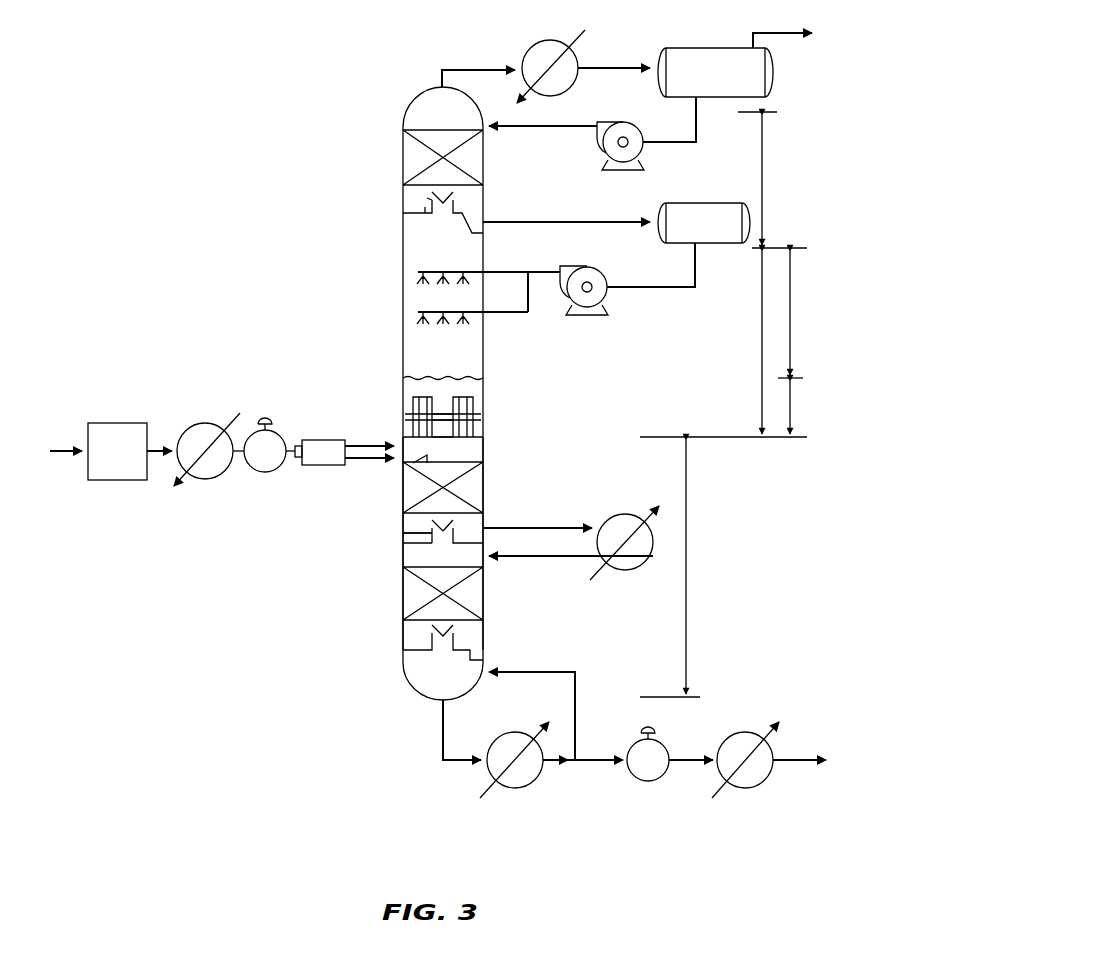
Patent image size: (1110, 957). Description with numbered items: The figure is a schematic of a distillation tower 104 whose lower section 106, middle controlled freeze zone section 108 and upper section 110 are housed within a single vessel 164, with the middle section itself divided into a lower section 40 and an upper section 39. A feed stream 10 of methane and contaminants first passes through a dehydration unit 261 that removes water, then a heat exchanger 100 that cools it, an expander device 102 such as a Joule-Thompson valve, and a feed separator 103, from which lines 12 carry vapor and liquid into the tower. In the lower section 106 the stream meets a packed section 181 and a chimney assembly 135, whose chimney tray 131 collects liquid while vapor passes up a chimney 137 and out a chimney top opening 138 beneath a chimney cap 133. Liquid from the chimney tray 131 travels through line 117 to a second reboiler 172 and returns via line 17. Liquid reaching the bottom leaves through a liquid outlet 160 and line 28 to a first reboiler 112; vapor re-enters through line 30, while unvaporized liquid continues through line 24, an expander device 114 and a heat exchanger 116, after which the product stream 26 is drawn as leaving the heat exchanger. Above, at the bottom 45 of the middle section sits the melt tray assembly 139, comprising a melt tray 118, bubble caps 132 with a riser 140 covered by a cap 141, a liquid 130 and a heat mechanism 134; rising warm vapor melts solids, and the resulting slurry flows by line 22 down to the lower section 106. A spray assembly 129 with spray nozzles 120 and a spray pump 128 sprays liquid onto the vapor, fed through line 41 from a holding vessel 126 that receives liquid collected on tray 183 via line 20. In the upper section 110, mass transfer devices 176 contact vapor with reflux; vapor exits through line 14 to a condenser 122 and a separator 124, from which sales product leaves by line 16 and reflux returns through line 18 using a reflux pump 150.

The feed stream 10 is at (62, 450).
The line 12 is at (326, 438).
The line 14 is at (478, 66).
The line 16 is at (767, 33).
The line 17 is at (580, 558).
The line 18 is at (556, 128).
The line 20 is at (542, 222).
The line 22 is at (395, 438).
The line 24 is at (590, 755).
The bottoms product stream 26 is at (794, 755).
The line 28 is at (458, 762).
The line 30 is at (535, 672).
The upper section 39 is at (792, 313).
The lower section 40 is at (792, 403).
The line 41 is at (643, 287).
The bottom 45 is at (447, 440).
The heat exchanger 100 is at (210, 422).
The expander device 102 is at (247, 475).
The feed separator 103 is at (298, 460).
The distillation tower 104 is at (307, 93).
The lower section 106 is at (690, 555).
The middle controlled freeze zone section 108 is at (758, 333).
The upper section 110 is at (764, 175).
The first reboiler 112 is at (524, 732).
The expander device 114 is at (660, 780).
The heat exchanger 116 is at (754, 732).
The line 117 is at (560, 528).
The melt tray 118 is at (470, 440).
The spray nozzle 120 is at (414, 280).
The condenser 122 is at (555, 40).
The separator 124 is at (692, 48).
The holding vessel 126 is at (688, 203).
The spray pump 128 is at (598, 266).
The spray assembly 129 is at (540, 320).
The liquid 130 is at (481, 414).
The chimney tray 131 is at (409, 543).
The bubble cap 132 is at (473, 398).
The chimney cap 133 is at (458, 522).
The heat mechanism 134 is at (409, 414).
The chimney assembly 135 is at (359, 548).
The chimney 137 is at (405, 532).
The chimney top opening 138 is at (437, 523).
The melt tray assembly 139 is at (478, 380).
The riser 140 is at (474, 434).
The cap 141 is at (418, 395).
The reflux pump 150 is at (630, 120).
The liquid outlet 160 is at (438, 700).
The single vessel 164 is at (485, 634).
The second reboiler 172 is at (665, 500).
The mass transfer device 176 is at (423, 128).
The packed section 181 is at (413, 458).
The tray 183 is at (422, 207).
The dehydration unit 261 is at (125, 422).